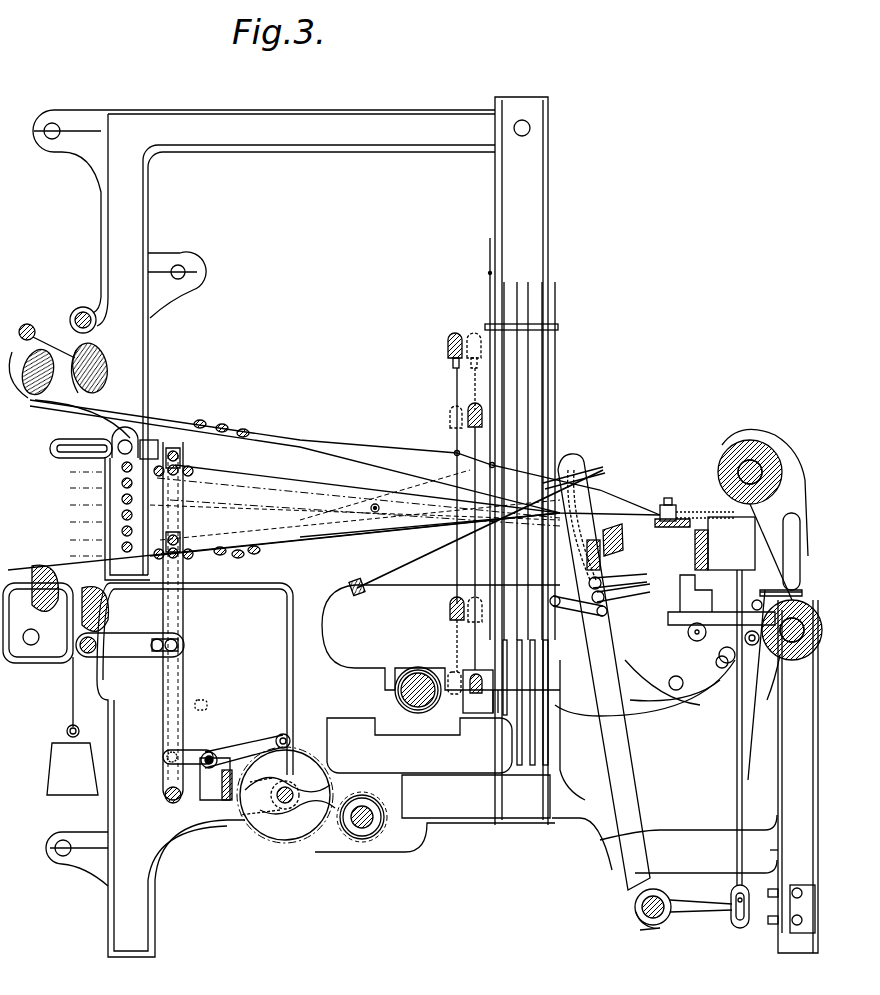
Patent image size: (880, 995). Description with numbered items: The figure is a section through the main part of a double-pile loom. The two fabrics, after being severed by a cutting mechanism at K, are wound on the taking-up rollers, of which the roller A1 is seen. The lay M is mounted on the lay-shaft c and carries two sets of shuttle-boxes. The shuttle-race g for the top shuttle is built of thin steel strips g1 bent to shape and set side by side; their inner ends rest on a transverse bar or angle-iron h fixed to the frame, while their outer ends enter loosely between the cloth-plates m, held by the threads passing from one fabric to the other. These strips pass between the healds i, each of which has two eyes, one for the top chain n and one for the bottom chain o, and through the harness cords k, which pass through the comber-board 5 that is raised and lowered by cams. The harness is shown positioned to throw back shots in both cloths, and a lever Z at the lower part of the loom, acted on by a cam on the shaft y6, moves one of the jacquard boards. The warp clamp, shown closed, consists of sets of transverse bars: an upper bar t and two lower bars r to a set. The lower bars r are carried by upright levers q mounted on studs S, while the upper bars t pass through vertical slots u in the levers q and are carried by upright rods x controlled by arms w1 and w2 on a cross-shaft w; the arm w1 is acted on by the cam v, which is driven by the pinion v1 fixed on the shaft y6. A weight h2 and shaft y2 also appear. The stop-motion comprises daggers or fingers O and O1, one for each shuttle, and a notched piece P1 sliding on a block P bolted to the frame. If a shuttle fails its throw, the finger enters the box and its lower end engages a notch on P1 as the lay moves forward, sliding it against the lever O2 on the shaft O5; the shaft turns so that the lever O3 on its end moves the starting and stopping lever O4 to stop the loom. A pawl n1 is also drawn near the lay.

The comber-board 5 is at (531, 326).
The harness cords k is at (522, 501).
The gears or healds i is at (468, 628).
The top chain n is at (345, 457).
The bottom chain o is at (284, 518).
The steel strips g1 is at (480, 529).
The transverse bar or angle-iron h is at (362, 595).
The shuttle-race g is at (600, 500).
The pawl n' n1 is at (595, 525).
The lay M is at (622, 752).
The lay-shaft c is at (640, 912).
The taking-up roller A1 is at (753, 514).
The lever O2 is at (782, 650).
The starting and stopping lever O4 is at (789, 551).
The lever O3 is at (791, 582).
The shaft O5 is at (720, 665).
The cutting mechanism K is at (725, 543).
The cloth-plates m is at (695, 520).
The dagger or finger O is at (618, 576).
The dagger or finger O1 is at (601, 600).
The notched piece P1 is at (690, 612).
The block P is at (662, 673).
The upright levers q is at (184, 680).
The upright rods x is at (184, 705).
The vertical slots u is at (180, 536).
The upper clamping-bar t is at (178, 466).
The lower clamping-bars r is at (175, 522).
The studs S is at (166, 802).
The weight h2 is at (72, 726).
The arm w2 is at (188, 750).
The cross-shaft w is at (241, 767).
The arm w1 is at (278, 732).
The cam v is at (286, 795).
The shaft y2 is at (290, 790).
The lever Z is at (277, 859).
The pinion v1 is at (366, 817).
The shaft y6 is at (360, 828).